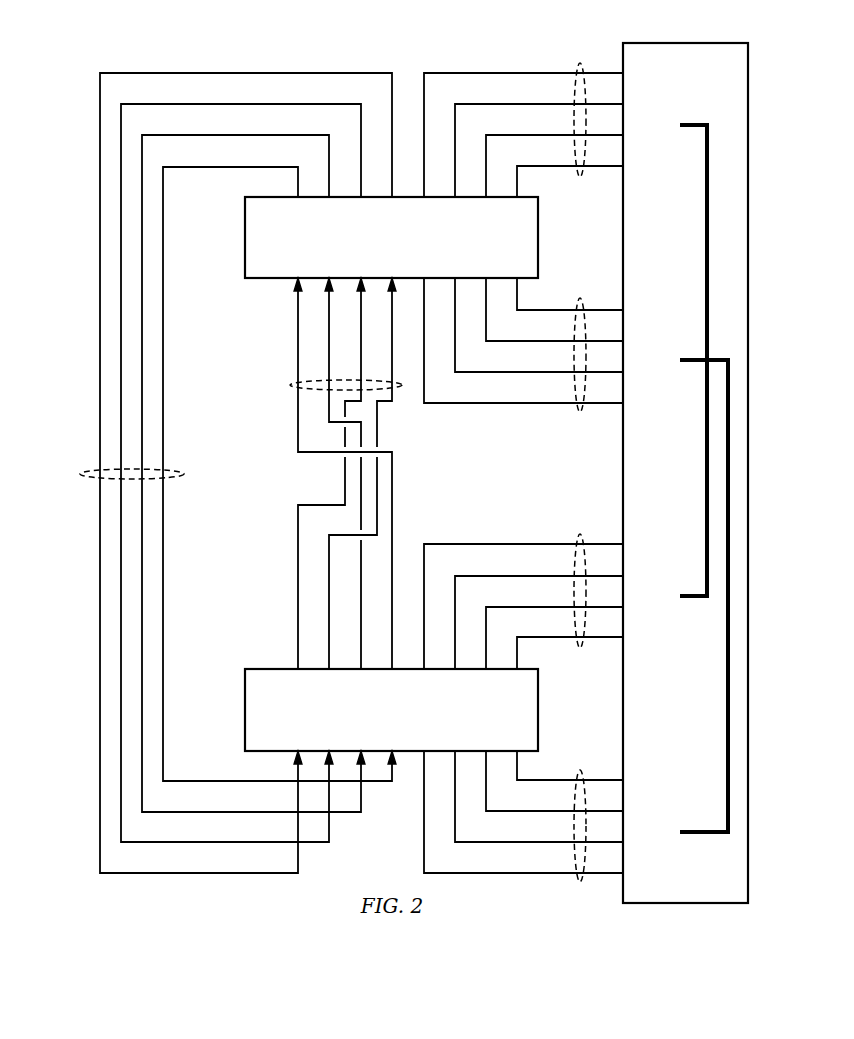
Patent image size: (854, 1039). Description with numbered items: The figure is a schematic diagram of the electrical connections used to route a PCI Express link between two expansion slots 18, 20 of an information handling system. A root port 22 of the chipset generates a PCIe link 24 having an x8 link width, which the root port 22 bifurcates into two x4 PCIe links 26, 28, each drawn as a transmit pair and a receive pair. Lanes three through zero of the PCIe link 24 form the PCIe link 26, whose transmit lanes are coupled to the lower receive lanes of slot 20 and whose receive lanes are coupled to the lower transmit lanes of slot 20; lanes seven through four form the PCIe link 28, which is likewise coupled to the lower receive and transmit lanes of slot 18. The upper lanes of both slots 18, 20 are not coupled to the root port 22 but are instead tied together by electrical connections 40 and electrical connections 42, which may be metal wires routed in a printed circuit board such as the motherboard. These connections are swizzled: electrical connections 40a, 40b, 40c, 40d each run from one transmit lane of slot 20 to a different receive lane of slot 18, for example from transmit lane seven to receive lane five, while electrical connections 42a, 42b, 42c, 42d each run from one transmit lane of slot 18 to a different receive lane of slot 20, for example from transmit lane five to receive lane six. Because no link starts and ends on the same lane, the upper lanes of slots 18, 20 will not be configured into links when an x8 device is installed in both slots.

The slot 18 is at (240, 227).
The slot 20 is at (240, 723).
The root port 22 is at (753, 437).
The PCIe link 24 is at (705, 242).
The PCIe link 26 is at (580, 534).
The PCIe link 28 is at (580, 62).
The electrical connections 40 is at (290, 386).
The electrical connection 40a is at (297, 613).
The electrical connection 40b is at (328, 572).
The electrical connection 40c is at (328, 365).
The electrical connection 40d is at (297, 322).
The electrical connections 42 is at (80, 474).
The electrical connection 42a is at (120, 428).
The electrical connection 42b is at (99, 387).
The electrical connection 42c is at (143, 560).
The electrical connection 42d is at (164, 528).